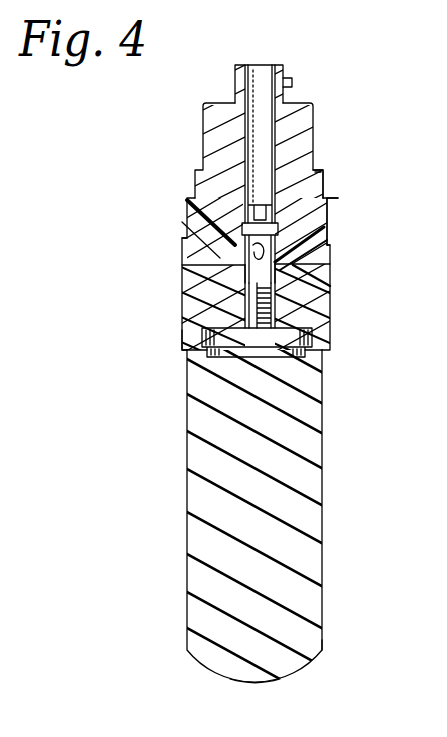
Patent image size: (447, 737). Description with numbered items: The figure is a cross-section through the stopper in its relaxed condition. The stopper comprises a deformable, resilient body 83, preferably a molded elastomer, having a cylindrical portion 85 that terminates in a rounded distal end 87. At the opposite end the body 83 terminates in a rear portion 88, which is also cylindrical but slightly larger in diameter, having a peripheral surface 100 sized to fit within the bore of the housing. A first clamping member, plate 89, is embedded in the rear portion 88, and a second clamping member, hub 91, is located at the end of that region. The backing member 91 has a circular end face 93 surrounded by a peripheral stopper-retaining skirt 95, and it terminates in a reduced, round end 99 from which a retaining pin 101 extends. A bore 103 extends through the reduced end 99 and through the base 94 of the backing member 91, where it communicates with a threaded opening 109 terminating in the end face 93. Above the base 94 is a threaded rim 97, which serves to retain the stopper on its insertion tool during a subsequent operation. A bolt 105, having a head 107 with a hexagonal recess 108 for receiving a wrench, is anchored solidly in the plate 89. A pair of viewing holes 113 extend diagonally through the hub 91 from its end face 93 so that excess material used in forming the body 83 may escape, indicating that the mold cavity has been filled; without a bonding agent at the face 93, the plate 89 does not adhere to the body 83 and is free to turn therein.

The resilient body 83 is at (332, 646).
The cylindrical portion 85 is at (322, 452).
The rounded distal end 87 is at (252, 683).
The rear portion 88 is at (322, 300).
The plate 89 is at (312, 336).
The hub 91 is at (340, 197).
The circular end face 93 is at (322, 272).
The base 94 is at (318, 217).
The stopper-retaining skirt 95 is at (182, 272).
The threaded rim 97 is at (326, 185).
The reduced round end 99 is at (237, 73).
The peripheral surface 100 is at (182, 342).
The retaining pin 101 is at (292, 82).
The bore 103 is at (240, 127).
The bolt 105 is at (183, 321).
The head 107 is at (186, 240).
The hexagonal recess 108 is at (277, 150).
The threaded opening 109 is at (183, 294).
The viewing holes 113 is at (190, 218).